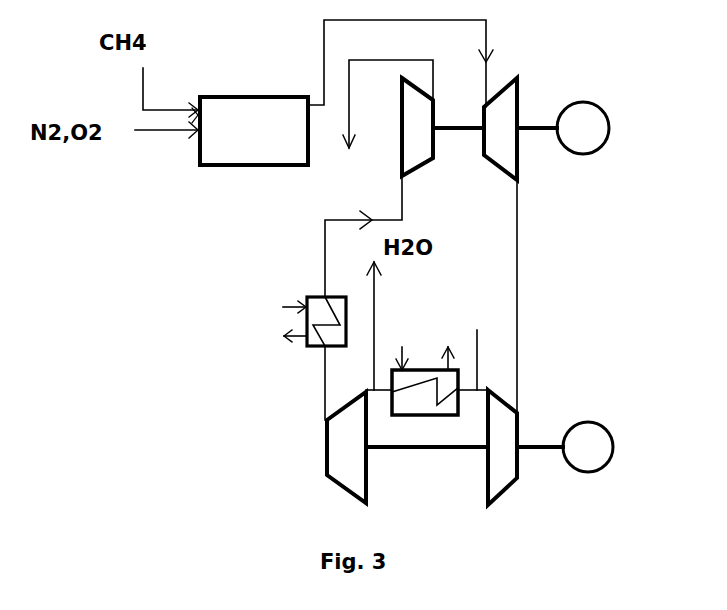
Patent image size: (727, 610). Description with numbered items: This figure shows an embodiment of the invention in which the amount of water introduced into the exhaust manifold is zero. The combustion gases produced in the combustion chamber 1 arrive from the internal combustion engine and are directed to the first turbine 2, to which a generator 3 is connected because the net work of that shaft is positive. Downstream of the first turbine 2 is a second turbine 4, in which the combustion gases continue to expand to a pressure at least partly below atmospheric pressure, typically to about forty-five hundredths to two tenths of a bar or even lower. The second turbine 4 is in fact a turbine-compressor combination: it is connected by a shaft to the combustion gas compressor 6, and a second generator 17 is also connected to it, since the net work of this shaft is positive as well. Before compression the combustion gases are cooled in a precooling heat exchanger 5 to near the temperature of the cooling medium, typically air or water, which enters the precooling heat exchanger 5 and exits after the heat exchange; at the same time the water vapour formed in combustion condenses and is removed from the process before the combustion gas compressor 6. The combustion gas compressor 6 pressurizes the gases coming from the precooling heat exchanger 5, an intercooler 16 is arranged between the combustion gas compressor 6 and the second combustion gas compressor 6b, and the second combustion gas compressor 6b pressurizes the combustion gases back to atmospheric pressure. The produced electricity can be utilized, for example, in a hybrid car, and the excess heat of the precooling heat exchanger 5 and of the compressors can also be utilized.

The combustion chamber 1 is at (213, 167).
The first turbine 2 is at (520, 121).
The generator 3 is at (599, 127).
The second turbine 4 is at (525, 447).
The precooling heat exchanger 5 is at (432, 365).
The combustion gas compressor 6 is at (325, 467).
The second combustion gas compressor 6b is at (418, 168).
The intercooler 16 is at (305, 295).
The second generator 17 is at (616, 447).